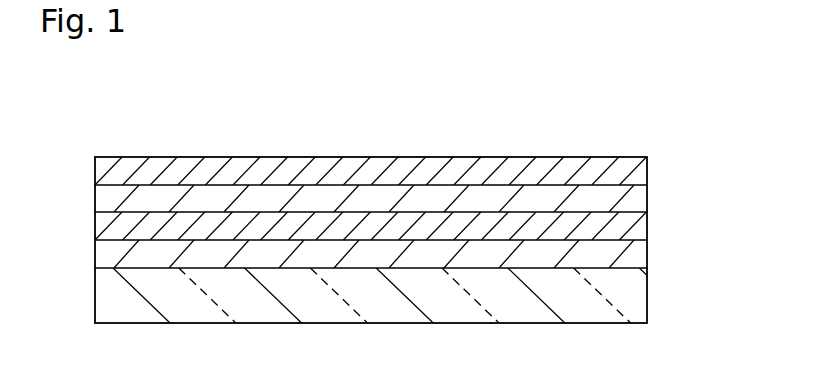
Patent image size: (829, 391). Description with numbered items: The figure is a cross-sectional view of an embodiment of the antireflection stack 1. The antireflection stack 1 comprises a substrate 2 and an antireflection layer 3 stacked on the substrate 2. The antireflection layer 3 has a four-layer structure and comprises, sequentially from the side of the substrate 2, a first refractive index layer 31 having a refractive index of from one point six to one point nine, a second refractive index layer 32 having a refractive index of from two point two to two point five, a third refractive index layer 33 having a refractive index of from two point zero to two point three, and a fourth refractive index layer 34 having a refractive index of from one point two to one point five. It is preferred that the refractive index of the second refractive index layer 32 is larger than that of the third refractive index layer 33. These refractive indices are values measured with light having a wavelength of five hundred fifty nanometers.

The antireflection stack 1 is at (365, 128).
The substrate 2 is at (118, 303).
The antireflection layer 3 is at (80, 160).
The first refractive index layer 31 is at (637, 255).
The second refractive index layer 32 is at (637, 227).
The third refractive index layer 33 is at (637, 199).
The fourth refractive index layer 34 is at (637, 172).